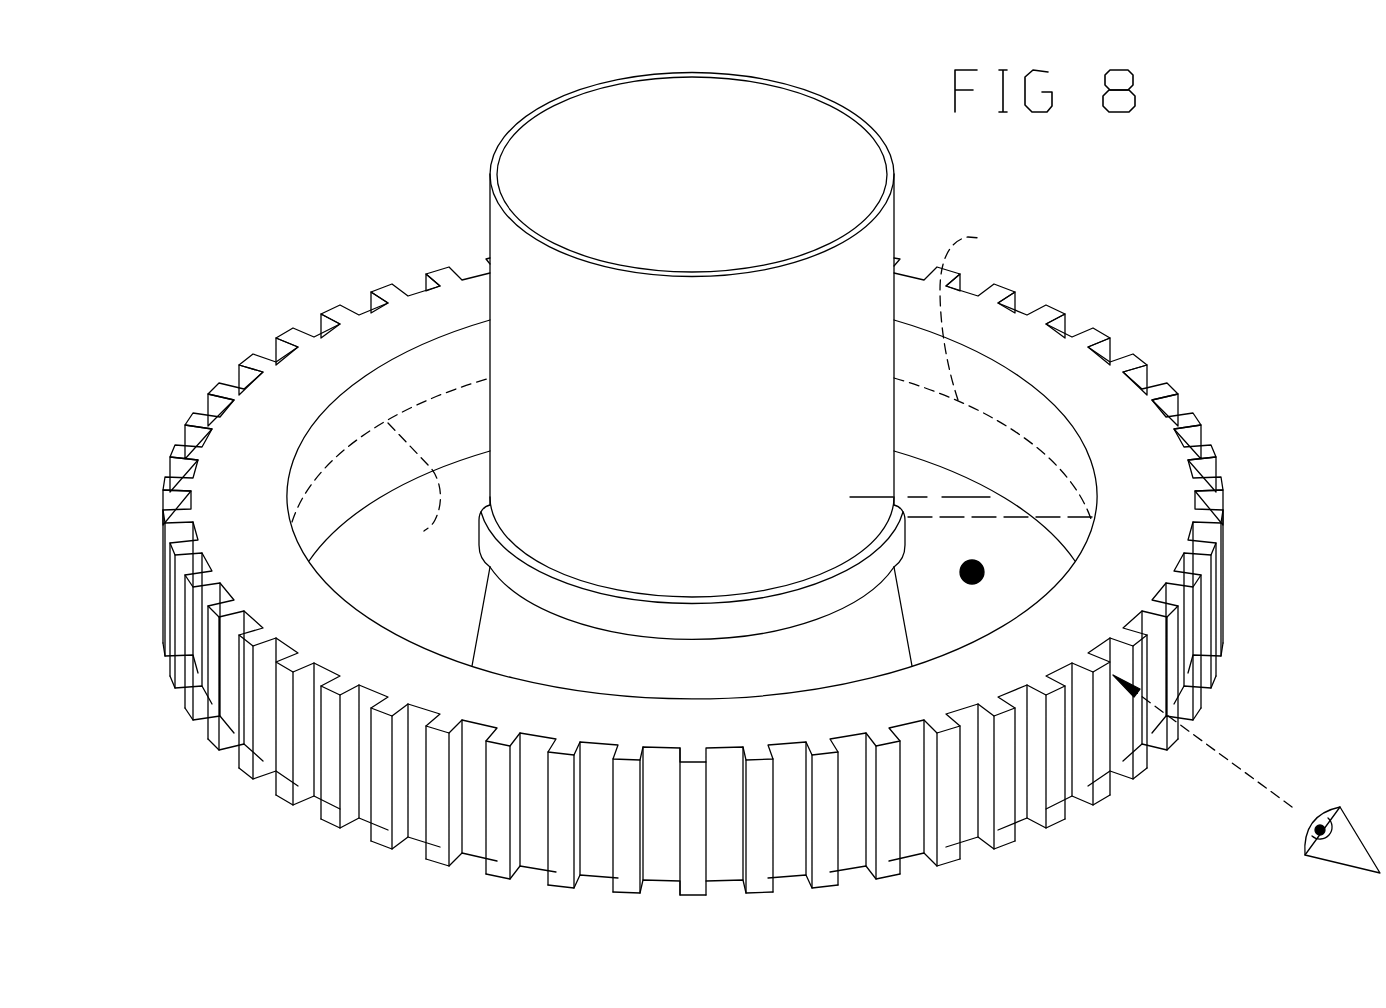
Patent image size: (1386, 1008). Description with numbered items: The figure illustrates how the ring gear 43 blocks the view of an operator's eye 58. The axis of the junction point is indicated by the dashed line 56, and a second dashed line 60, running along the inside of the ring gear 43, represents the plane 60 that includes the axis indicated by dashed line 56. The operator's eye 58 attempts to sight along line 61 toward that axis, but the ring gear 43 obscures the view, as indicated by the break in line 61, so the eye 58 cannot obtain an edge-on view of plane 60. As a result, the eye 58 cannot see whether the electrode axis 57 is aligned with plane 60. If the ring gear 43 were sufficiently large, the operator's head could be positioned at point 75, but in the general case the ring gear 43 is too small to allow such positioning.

The ring gear 43 is at (264, 511).
The dashed line indicating axis 56 is at (980, 517).
The electrode axis 57 is at (883, 495).
The eye 58 is at (1330, 862).
The plane 60 is at (692, 392).
The line 61 is at (1231, 758).
The point 75 is at (966, 580).